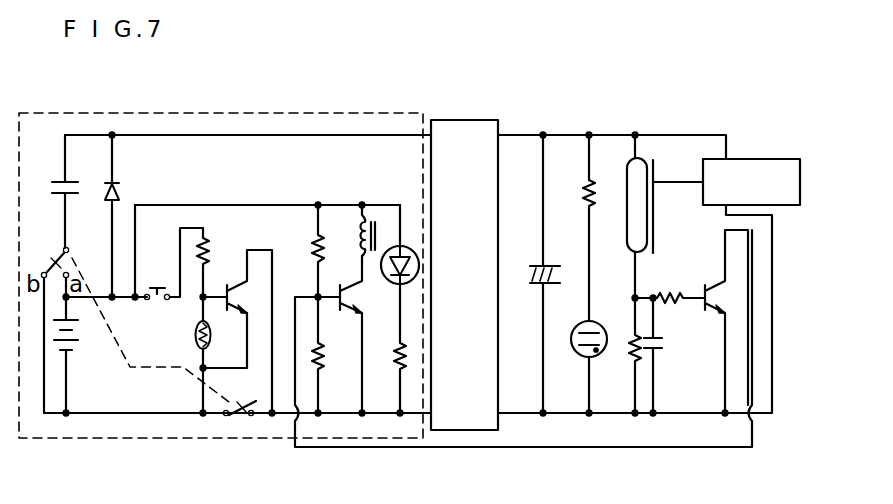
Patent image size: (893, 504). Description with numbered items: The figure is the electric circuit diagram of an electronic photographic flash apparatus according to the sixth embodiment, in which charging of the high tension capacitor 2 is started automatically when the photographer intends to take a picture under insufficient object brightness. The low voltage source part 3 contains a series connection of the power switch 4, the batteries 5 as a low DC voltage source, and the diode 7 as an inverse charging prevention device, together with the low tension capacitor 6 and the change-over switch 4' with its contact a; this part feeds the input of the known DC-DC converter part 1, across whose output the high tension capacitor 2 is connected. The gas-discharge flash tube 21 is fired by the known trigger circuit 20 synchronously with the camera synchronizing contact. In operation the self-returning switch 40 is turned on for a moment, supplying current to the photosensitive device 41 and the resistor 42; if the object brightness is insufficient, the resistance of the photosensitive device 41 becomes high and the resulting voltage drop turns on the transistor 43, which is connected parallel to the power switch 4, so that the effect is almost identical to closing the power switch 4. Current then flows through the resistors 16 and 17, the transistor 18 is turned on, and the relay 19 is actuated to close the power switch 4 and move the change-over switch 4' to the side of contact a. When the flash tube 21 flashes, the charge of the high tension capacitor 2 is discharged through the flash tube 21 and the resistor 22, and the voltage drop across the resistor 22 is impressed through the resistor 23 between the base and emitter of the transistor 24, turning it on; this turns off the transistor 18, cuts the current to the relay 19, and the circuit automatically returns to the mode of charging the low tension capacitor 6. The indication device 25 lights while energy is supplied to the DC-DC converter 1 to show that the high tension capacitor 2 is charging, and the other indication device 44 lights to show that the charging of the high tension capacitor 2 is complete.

The DC-DC converter part 1 is at (467, 128).
The high tension capacitor 2 is at (535, 282).
The low voltage source part 3 is at (262, 112).
The power switch 4 is at (164, 370).
The change-over switch 4' is at (71, 244).
The batteries 5 is at (78, 343).
The low tension capacitor 6 is at (53, 185).
The diode 7 is at (122, 190).
The resistor 16 is at (325, 357).
The resistor 17 is at (308, 245).
The transistor 18 is at (340, 312).
The relay 19 is at (357, 238).
The trigger circuit 20 is at (745, 158).
The gas-discharge flash tube 21 is at (633, 196).
The resistor 22 is at (628, 350).
The resistor 23 is at (668, 305).
The transistor 24 is at (718, 298).
The indication device 25 is at (396, 285).
The self-returning switch 40 is at (153, 282).
The photosensitive device 41 is at (195, 336).
The resistor 42 is at (210, 256).
The transistor 43 is at (243, 297).
The indication device 44 is at (578, 358).